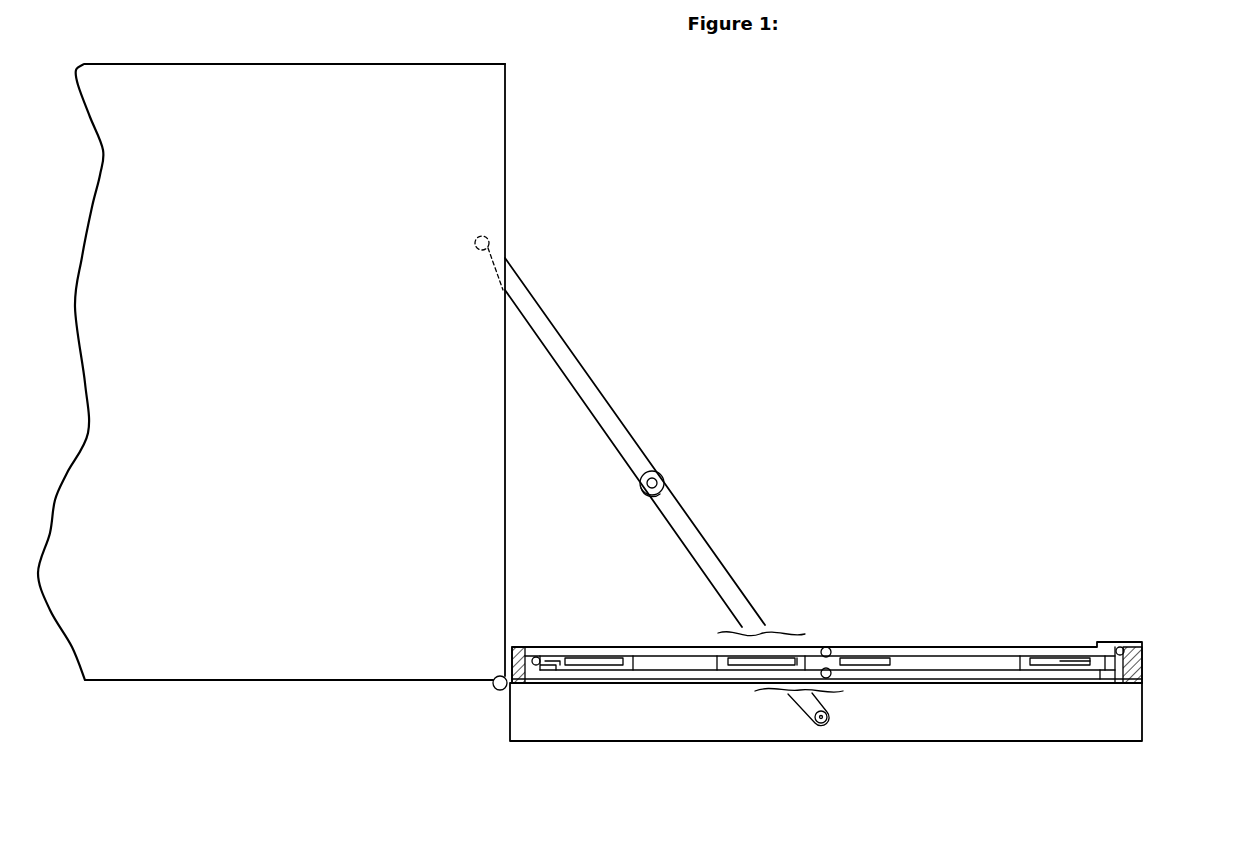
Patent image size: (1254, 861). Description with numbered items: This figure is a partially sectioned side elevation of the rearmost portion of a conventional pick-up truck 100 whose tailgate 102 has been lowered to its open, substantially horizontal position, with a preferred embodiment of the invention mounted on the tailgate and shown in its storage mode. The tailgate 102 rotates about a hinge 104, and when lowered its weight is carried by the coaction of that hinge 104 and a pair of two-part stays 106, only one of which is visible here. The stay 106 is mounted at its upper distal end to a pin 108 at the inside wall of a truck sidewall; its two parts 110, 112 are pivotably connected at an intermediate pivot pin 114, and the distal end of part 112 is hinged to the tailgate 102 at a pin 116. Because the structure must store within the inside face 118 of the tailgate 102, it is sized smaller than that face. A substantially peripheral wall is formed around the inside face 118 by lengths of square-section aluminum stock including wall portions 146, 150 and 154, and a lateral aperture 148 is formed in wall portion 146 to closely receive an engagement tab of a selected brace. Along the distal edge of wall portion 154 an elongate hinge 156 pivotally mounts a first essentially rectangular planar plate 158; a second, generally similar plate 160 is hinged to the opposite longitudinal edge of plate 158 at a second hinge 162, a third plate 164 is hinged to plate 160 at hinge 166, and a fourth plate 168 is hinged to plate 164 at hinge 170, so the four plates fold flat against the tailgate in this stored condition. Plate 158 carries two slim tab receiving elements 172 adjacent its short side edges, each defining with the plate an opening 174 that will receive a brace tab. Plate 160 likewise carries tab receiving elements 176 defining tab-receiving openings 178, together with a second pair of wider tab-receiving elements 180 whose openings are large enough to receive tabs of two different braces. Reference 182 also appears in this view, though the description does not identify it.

The pick-up truck 100 is at (527, 93).
The tailgate 102 is at (809, 695).
The hinge 104 is at (494, 689).
The two-part stay 106 is at (640, 419).
The pin 108 is at (493, 240).
The stay part 110 is at (575, 353).
The stay part 112 is at (680, 497).
The intermediate pivot pin 114 is at (663, 471).
The pin 116 is at (821, 723).
The inside face 118 is at (992, 682).
The wall portion 146 is at (911, 715).
The lateral aperture 148 is at (863, 664).
The wall portion 150 is at (533, 665).
The wall portion 154 is at (1142, 664).
The elongate hinge 156 is at (1142, 642).
The first plate 158 is at (906, 648).
The second plate 160 is at (584, 652).
The second hinge 162 is at (826, 647).
The third plate 164 is at (676, 670).
The hinge 166 is at (520, 683).
The fourth plate 168 is at (1100, 676).
The hinge 170 is at (830, 678).
The tab receiving element 172 is at (1028, 665).
The opening 174 is at (1063, 663).
The tab receiving element 176 is at (797, 662).
The tab-receiving opening 178 is at (739, 660).
The tab-receiving element 180 is at (555, 668).
The slide 182 is at (590, 665).